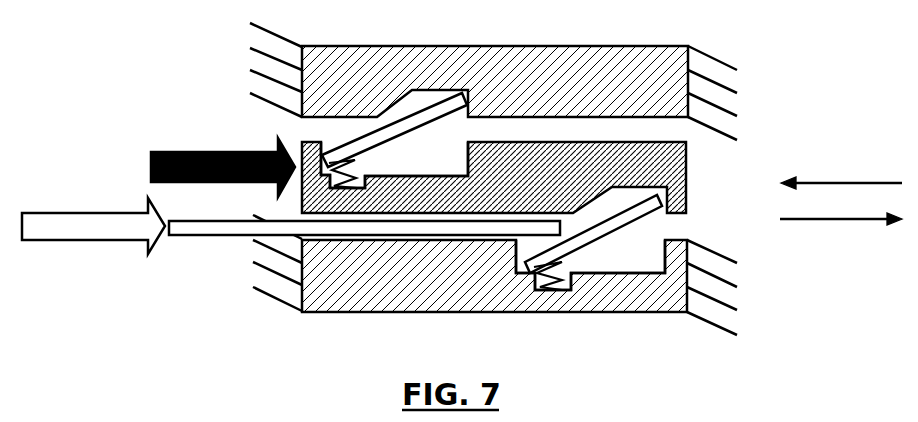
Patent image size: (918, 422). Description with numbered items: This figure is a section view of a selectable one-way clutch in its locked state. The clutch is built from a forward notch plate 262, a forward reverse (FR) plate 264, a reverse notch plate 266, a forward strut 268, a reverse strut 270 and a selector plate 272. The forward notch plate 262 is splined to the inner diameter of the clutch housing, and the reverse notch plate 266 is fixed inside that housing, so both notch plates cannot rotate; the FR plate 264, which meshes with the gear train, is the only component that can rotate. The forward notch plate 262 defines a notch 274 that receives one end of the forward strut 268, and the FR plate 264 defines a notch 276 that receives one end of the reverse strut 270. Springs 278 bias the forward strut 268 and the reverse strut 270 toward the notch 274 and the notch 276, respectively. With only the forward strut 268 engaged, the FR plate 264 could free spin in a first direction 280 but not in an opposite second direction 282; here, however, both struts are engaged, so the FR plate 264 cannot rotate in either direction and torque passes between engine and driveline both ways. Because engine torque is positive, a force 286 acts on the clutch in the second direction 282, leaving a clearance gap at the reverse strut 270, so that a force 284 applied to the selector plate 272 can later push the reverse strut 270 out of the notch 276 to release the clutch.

The forward notch plate 262 is at (592, 45).
The forward reverse (FR) plate 264 is at (687, 175).
The reverse notch plate 266 is at (587, 313).
The forward strut 268 is at (405, 137).
The reverse strut 270 is at (605, 238).
The selector plate 272 is at (220, 237).
The notch 274 is at (414, 92).
The notch 276 is at (603, 195).
The springs 278 is at (362, 163).
The first direction 280 is at (818, 182).
The second direction 282 is at (820, 220).
The force 284 is at (75, 212).
The force 286 is at (210, 152).